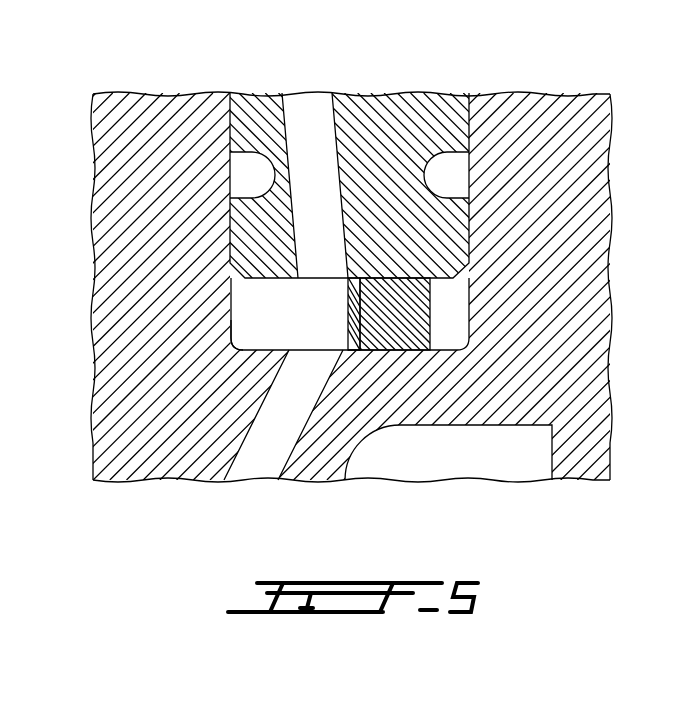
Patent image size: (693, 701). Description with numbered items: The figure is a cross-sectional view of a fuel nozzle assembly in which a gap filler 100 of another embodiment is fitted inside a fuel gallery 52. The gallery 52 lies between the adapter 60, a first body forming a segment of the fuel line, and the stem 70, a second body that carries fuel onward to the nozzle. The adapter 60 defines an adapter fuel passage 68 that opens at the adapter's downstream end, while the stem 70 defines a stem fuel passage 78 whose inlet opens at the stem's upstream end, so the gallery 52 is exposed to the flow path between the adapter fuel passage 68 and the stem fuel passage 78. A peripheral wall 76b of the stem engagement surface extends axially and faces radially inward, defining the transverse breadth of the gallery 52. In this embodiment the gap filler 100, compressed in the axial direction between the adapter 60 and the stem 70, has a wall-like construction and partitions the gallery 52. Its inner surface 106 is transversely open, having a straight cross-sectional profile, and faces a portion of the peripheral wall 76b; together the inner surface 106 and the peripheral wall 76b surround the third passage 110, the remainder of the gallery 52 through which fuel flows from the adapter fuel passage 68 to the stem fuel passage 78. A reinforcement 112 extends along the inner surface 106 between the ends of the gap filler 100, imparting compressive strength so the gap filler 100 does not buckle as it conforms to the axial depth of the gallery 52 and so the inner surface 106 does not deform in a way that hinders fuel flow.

The stem 70 is at (157, 137).
The adapter 60 is at (262, 123).
The adapter fuel passage 68 is at (313, 147).
The fuel gallery 52 is at (230, 312).
The third passage 110 is at (300, 329).
The gap filler 100 is at (430, 317).
The inner surface 106 is at (348, 300).
The reinforcement 112 is at (353, 350).
The peripheral wall 76b is at (233, 335).
The stem fuel passage 78 is at (253, 432).